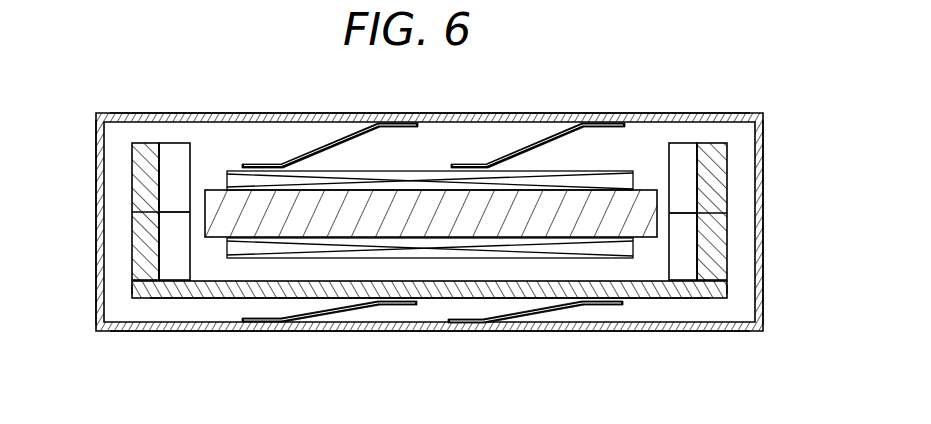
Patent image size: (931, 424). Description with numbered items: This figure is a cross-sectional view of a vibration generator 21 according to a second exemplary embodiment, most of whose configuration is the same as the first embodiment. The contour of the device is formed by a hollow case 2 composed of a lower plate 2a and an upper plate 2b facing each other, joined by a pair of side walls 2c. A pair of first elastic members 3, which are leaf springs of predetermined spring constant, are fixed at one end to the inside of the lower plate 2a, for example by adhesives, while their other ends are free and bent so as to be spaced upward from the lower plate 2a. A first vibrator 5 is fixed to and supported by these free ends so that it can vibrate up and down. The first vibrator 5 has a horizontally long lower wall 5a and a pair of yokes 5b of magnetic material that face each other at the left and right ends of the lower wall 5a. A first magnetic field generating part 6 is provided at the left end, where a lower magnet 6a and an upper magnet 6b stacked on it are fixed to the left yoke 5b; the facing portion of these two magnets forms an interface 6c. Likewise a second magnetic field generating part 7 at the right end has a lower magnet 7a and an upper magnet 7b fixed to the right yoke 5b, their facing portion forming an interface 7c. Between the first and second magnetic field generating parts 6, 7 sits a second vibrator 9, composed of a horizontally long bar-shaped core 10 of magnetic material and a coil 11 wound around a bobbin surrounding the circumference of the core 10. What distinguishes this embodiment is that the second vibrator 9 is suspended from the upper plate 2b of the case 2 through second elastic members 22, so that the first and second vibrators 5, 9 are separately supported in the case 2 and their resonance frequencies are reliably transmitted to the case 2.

The vibration actuator 21 is at (121, 111).
The case 2 is at (202, 332).
The lower plate 2a is at (225, 333).
The upper plate 2b is at (233, 118).
The side walls 2c is at (96, 295).
The first elastic members 3 is at (355, 312).
The second elastic members 22 is at (324, 150).
The first vibrator 5 is at (432, 301).
The lower wall 5a is at (477, 300).
The yokes 5b is at (140, 197).
The first magnetic field generating part 6 is at (175, 299).
The lower magnet 6a is at (177, 265).
The upper magnet 6b is at (180, 163).
The interface 6c is at (170, 216).
The second magnetic field generating part 7 is at (688, 306).
The lower magnet 7a is at (690, 267).
The upper magnet 7b is at (687, 160).
The interface 7c is at (691, 217).
The second vibrator 9 is at (578, 162).
The core 10 is at (443, 200).
The coil 11 is at (387, 240).